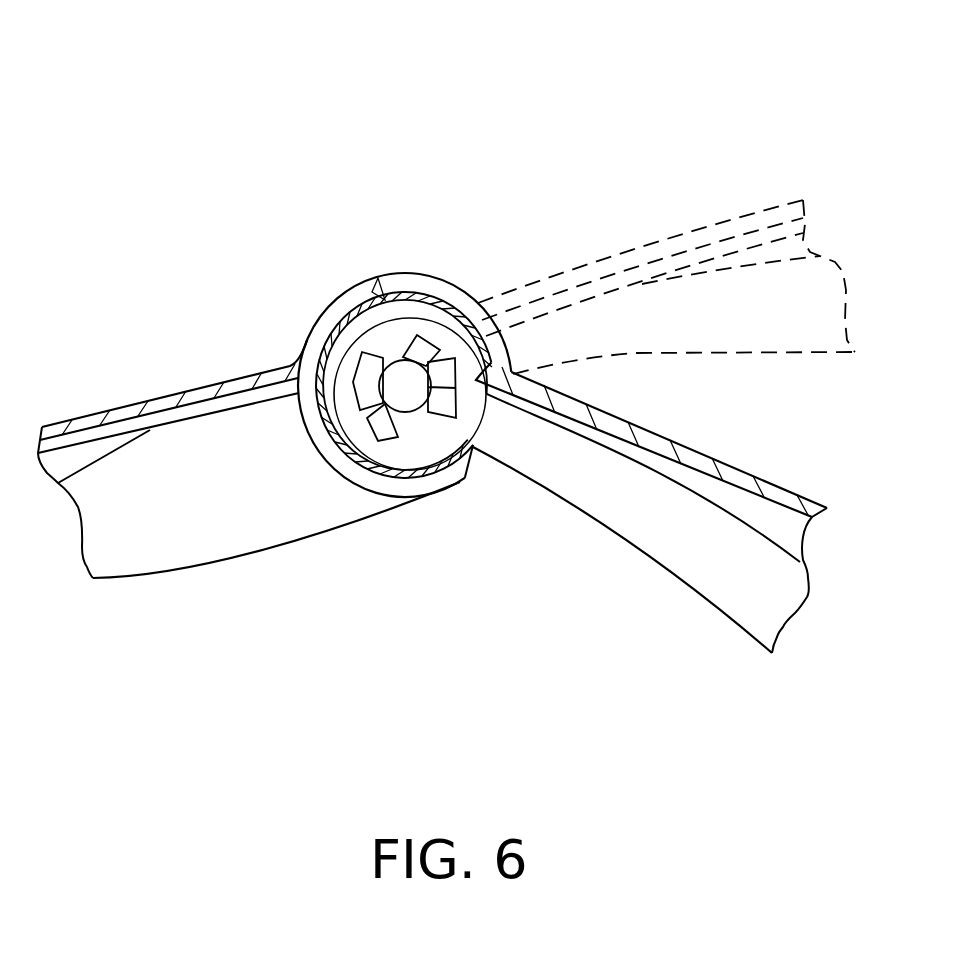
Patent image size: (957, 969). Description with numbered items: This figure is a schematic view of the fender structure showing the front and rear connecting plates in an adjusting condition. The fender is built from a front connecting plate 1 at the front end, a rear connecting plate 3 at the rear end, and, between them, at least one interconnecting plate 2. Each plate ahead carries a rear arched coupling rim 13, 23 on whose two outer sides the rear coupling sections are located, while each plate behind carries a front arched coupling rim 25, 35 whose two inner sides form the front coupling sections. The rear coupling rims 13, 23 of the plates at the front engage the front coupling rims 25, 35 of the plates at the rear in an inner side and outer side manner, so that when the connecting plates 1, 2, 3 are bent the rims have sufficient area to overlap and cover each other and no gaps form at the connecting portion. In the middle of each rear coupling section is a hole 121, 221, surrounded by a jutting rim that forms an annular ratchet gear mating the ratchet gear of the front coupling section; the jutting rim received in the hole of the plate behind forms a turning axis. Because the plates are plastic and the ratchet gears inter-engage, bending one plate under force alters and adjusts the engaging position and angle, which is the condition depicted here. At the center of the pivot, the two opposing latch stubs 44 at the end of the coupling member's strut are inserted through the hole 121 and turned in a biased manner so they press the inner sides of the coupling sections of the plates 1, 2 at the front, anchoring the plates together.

The front connecting plate 1 is at (752, 462).
The interconnecting plate 2 is at (249, 407).
The rear connecting plate 3 is at (163, 393).
The rear arched coupling rim 13 is at (404, 247).
The rear arched coupling rim 23 is at (390, 273).
The front arched coupling rim 25 is at (351, 298).
The front arched coupling rim 35 is at (347, 297).
The latch stubs 44 is at (392, 425).
The hole 121 is at (481, 501).
The hole 221 is at (453, 420).